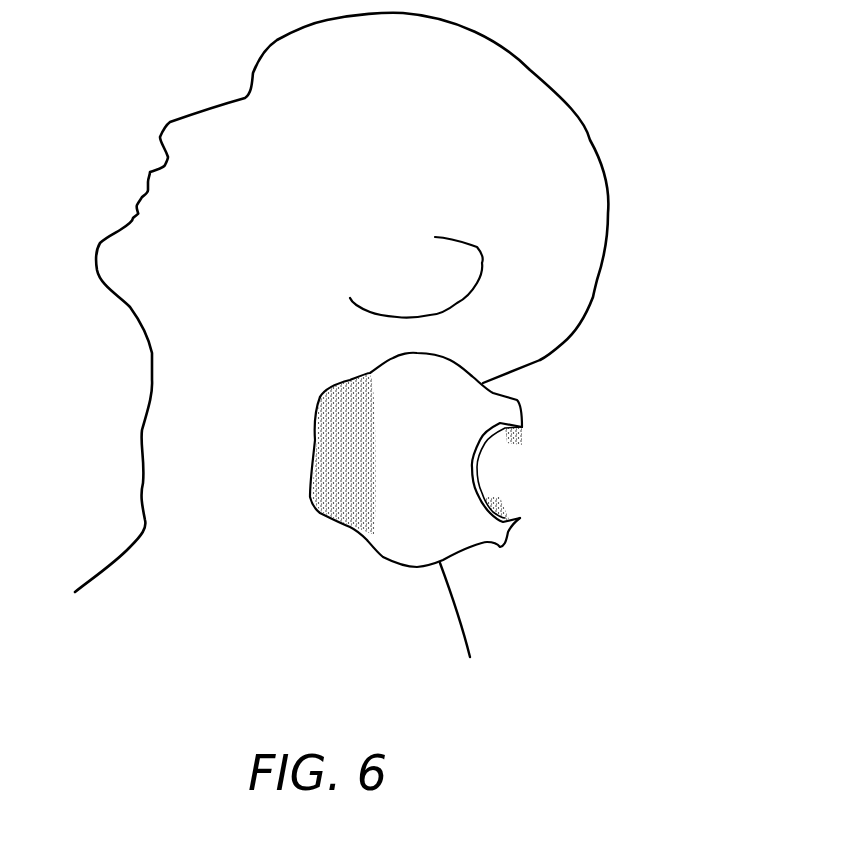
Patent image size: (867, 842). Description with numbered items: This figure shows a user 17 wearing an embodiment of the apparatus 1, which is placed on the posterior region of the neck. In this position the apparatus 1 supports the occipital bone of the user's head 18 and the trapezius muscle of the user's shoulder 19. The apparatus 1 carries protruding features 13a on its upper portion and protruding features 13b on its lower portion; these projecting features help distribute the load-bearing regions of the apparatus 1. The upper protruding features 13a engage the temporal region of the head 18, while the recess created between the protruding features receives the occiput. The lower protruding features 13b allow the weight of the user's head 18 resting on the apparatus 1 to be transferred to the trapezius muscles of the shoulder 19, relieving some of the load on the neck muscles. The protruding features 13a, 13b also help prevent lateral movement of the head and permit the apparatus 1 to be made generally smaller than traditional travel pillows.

The apparatus 1 is at (486, 469).
The protruding features 13a is at (440, 367).
The protruding features 13b is at (408, 560).
The user 17 is at (642, 182).
The user's head 18 is at (502, 360).
The user's shoulder 19 is at (437, 600).